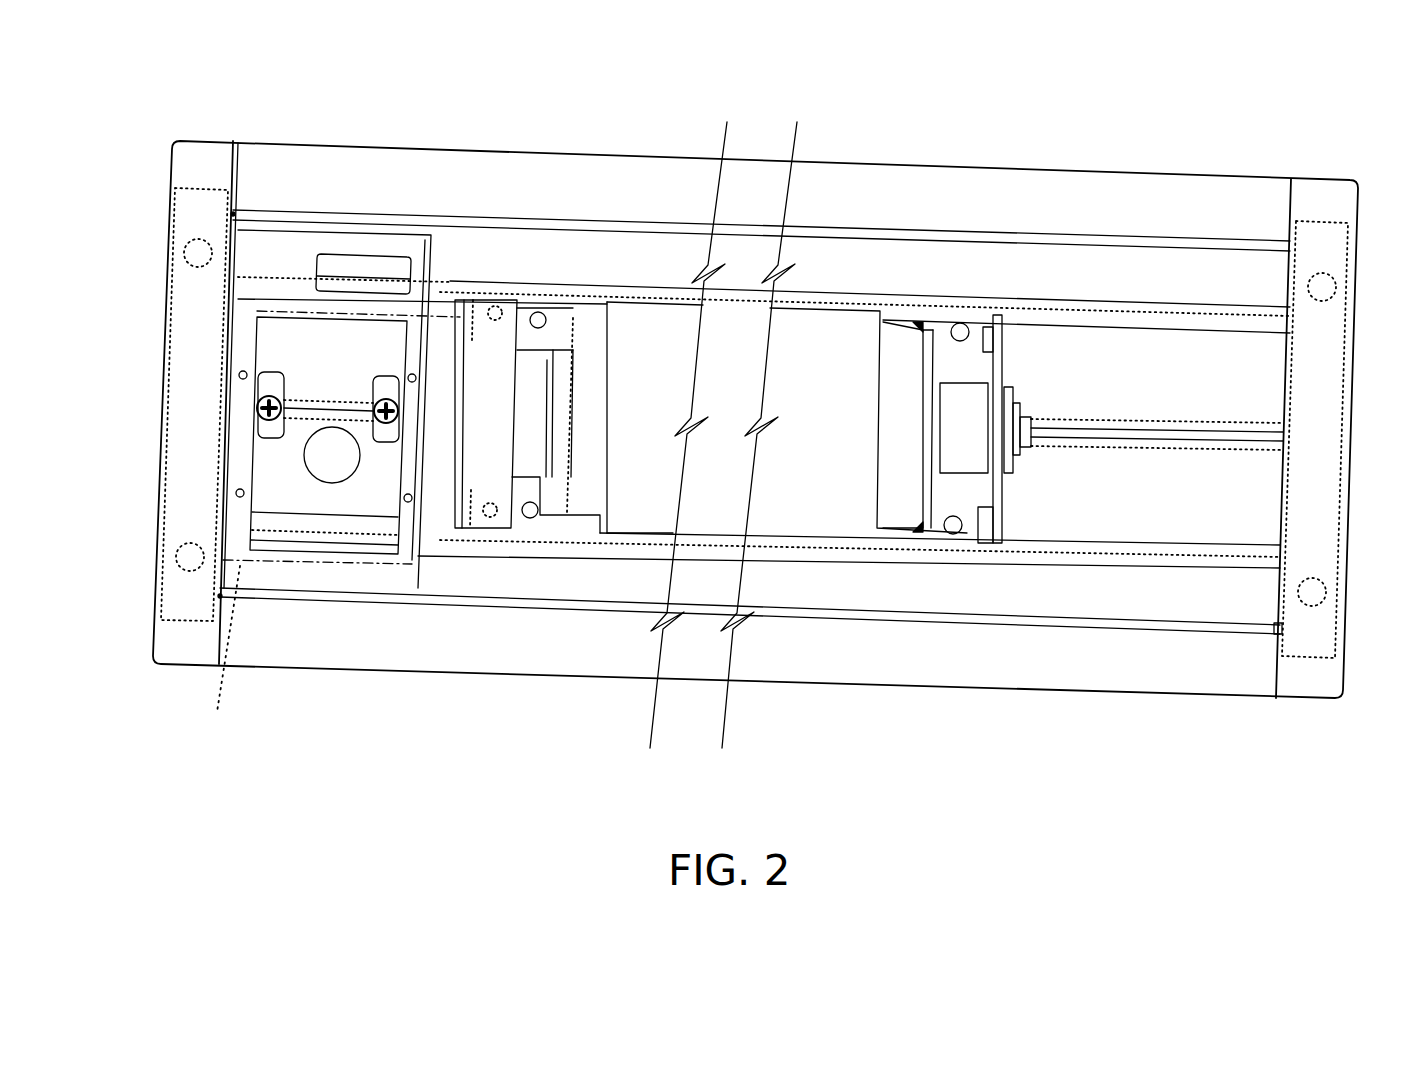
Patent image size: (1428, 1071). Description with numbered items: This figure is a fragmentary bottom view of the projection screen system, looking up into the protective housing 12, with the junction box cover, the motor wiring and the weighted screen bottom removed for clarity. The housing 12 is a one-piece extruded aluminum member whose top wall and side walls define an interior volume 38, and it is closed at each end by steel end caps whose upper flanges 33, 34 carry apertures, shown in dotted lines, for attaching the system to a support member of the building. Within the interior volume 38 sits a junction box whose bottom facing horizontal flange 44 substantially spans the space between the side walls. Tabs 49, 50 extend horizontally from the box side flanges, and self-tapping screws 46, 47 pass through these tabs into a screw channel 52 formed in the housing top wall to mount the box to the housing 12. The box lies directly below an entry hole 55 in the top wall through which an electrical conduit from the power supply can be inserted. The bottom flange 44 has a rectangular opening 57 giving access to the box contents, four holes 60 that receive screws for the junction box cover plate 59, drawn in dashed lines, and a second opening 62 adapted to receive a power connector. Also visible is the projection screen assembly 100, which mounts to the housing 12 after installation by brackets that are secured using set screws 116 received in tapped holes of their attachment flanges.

The protective housing 12 is at (925, 135).
The upper flange 33 is at (187, 428).
The upper flange 34 is at (1318, 463).
The interior volume 38 is at (1093, 591).
The bottom facing horizontal flange 44 is at (277, 250).
The self-tapping screw 46 is at (258, 405).
The self-tapping screw 47 is at (387, 424).
The tab 49 is at (277, 434).
The tab 50 is at (380, 441).
The screw channel 52 is at (356, 398).
The entry hole 55 is at (332, 480).
The rectangular opening 57 is at (254, 350).
The junction box cover plate 59 is at (219, 656).
The holes 60 is at (414, 374).
The second opening 62 is at (349, 253).
The projection screen assembly 100 is at (838, 575).
The set screws 116 is at (497, 305).